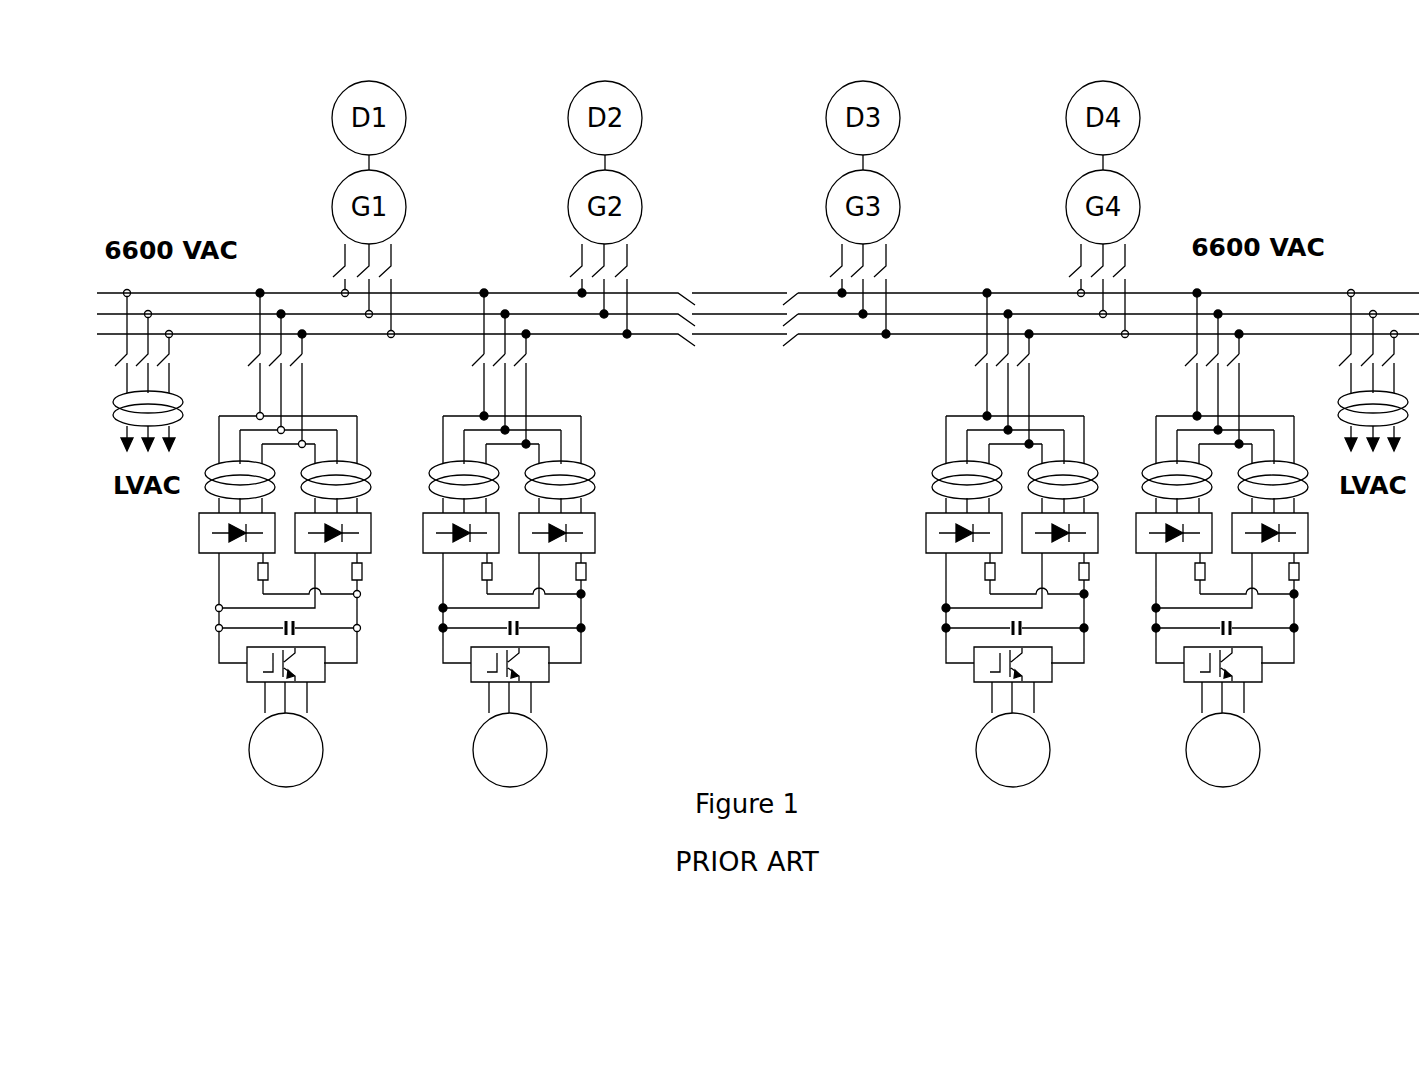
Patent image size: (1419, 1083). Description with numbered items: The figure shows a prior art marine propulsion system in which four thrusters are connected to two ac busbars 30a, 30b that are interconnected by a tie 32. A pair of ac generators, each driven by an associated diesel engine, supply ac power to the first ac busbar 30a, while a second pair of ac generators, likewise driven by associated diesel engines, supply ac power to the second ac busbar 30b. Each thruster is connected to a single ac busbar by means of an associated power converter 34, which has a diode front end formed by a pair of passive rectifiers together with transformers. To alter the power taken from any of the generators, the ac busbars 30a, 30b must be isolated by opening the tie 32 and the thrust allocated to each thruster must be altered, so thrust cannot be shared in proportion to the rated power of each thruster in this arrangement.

The first ac busbar 30a is at (458, 274).
The second ac busbar 30b is at (1018, 272).
The tie 32 is at (755, 358).
The power converter 34 is at (183, 485).